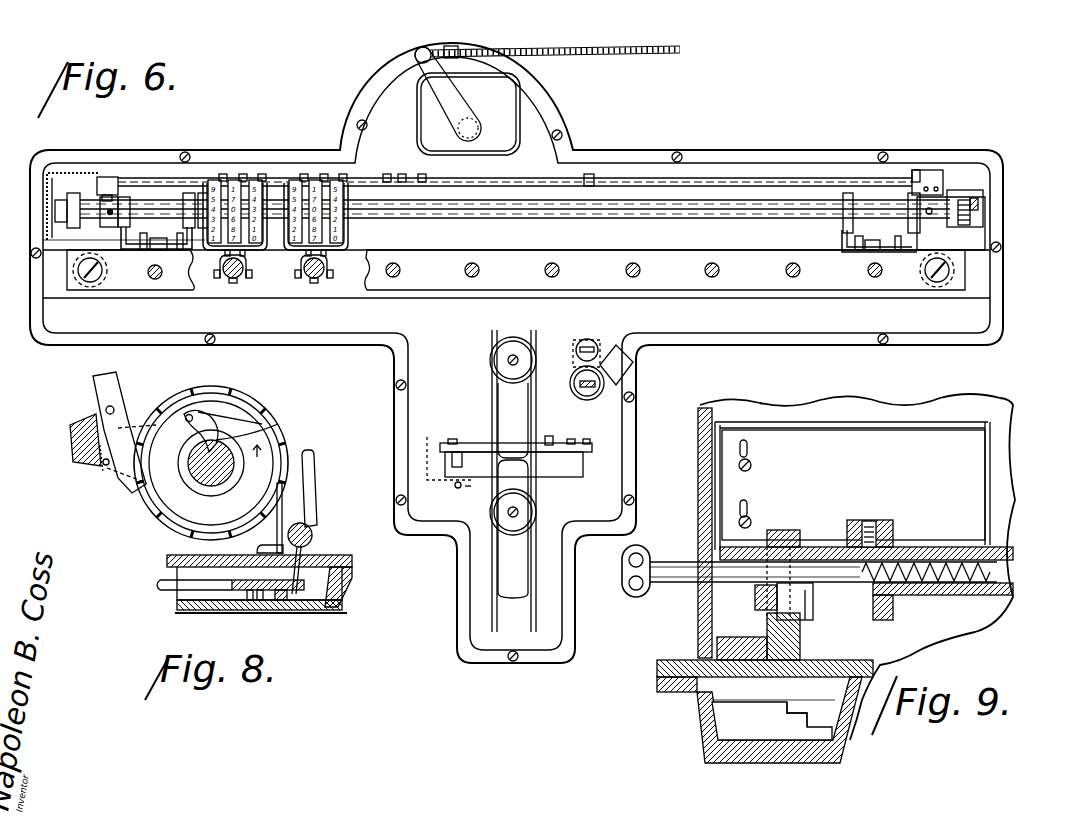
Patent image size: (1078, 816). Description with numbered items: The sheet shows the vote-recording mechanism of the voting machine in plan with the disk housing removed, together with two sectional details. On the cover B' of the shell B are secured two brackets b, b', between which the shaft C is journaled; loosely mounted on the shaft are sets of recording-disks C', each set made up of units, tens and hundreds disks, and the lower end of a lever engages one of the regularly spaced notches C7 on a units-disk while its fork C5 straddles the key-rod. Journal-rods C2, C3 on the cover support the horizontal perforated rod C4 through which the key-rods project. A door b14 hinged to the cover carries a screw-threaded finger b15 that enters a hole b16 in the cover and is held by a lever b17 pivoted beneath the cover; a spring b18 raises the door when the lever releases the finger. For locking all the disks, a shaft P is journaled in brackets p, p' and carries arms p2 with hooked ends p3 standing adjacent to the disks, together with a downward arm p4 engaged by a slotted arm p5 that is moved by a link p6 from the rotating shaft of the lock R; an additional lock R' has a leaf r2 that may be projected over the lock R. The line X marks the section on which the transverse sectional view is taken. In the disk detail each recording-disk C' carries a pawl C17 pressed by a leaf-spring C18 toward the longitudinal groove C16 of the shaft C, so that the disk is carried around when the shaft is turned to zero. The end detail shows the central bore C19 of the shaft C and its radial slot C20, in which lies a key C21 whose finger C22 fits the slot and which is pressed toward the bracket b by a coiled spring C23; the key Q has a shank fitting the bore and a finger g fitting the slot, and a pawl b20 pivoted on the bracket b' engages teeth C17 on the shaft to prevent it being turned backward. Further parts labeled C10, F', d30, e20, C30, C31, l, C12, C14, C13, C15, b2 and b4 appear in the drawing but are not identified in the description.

In FIG. 6, the bracket b is at (73, 178).
In FIG. 9, the bracket b is at (761, 658).
In FIG. 6, the bracket p is at (153, 183).
In FIG. 8, the bracket p is at (315, 522).
In FIG. 6, the recording-disks C' is at (421, 219).
In FIG. 8, the recording-disks C' is at (211, 454).
In FIG. 6, the hooked ends p3 is at (247, 172).
In FIG. 8, the hooked ends p3 is at (307, 447).
In FIG. 6, the downwardly-projecting arm p4 is at (590, 172).
In FIG. 8, the downwardly-projecting arm p4 is at (300, 570).
In FIG. 6, the shaft C is at (515, 165).
In FIG. 8, the shaft C is at (175, 476).
In FIG. 9, the shaft C is at (882, 550).
In FIG. 6, the shaft P is at (780, 175).
In FIG. 8, the shaft P is at (311, 536).
In FIG. 6, the bracket p' is at (925, 173).
In FIG. 6, the bracket b' is at (965, 170).
In FIG. 6, the pawl C17 is at (972, 200).
In FIG. 8, the pawl C17 is at (198, 407).
In FIG. 6, the pawl b20 is at (980, 222).
In FIG. 6, the cover B' is at (822, 327).
In FIG. 8, the cover B' is at (237, 576).
In FIG. 6, the journal-rod C2 is at (88, 290).
In FIG. 9, the journal-rod C2 is at (698, 468).
In FIG. 6, the journal-rod C3 is at (210, 257).
In FIG. 8, the journal-rod C3 is at (75, 440).
In FIG. 6, the fork C5 is at (247, 282).
In FIG. 9, the fork C5 is at (978, 447).
In FIG. 6, the bearing C10 is at (312, 282).
In FIG. 6, the horizontal perforated rod C4 is at (752, 280).
In FIG. 8, the horizontal perforated rod C4 is at (103, 388).
In FIG. 6, the lever F' is at (520, 93).
In FIG. 6, the section line X is at (517, 107).
In FIG. 6, the roller d30 is at (503, 395).
In FIG. 6, the screw-threaded finger b15 is at (468, 445).
In FIG. 6, the door b14 is at (477, 445).
In FIG. 9, the door b14 is at (760, 617).
In FIG. 6, the spring b18 is at (556, 441).
In FIG. 6, the lever b17 is at (428, 482).
In FIG. 6, the hole b16 is at (457, 490).
In FIG. 6, the pin e20 is at (468, 490).
In FIG. 6, the channel C30 is at (507, 575).
In FIG. 6, the lock R is at (586, 337).
In FIG. 6, the leaf r2 is at (607, 343).
In FIG. 6, the lock R' is at (615, 376).
In FIG. 8, the leaf-spring C18 is at (230, 420).
In FIG. 8, the longitudinal radial groove C16 is at (227, 440).
In FIG. 8, the arm C31 is at (113, 473).
In FIG. 8, the notches C7 is at (191, 485).
In FIG. 8, the arms p2 is at (314, 481).
In FIG. 8, the link p6 is at (160, 588).
In FIG. 8, the slotted arm p5 is at (277, 594).
In FIG. 8, the block l is at (310, 607).
In FIG. 8, the shell B is at (270, 599).
In FIG. 9, the slot C12 is at (749, 448).
In FIG. 9, the screw C14 is at (753, 465).
In FIG. 9, the slot C13 is at (750, 507).
In FIG. 9, the plate C15 is at (715, 488).
In FIG. 9, the key Q is at (652, 557).
In FIG. 9, the key C21 is at (820, 570).
In FIG. 9, the central bore C19 is at (942, 547).
In FIG. 9, the coiled spring C23 is at (1015, 577).
In FIG. 9, the finger g is at (753, 600).
In FIG. 9, the radial slot C20 is at (828, 590).
In FIG. 9, the finger C22 is at (803, 622).
In FIG. 9, the housing b2 is at (825, 718).
In FIG. 9, the step b4 is at (793, 707).